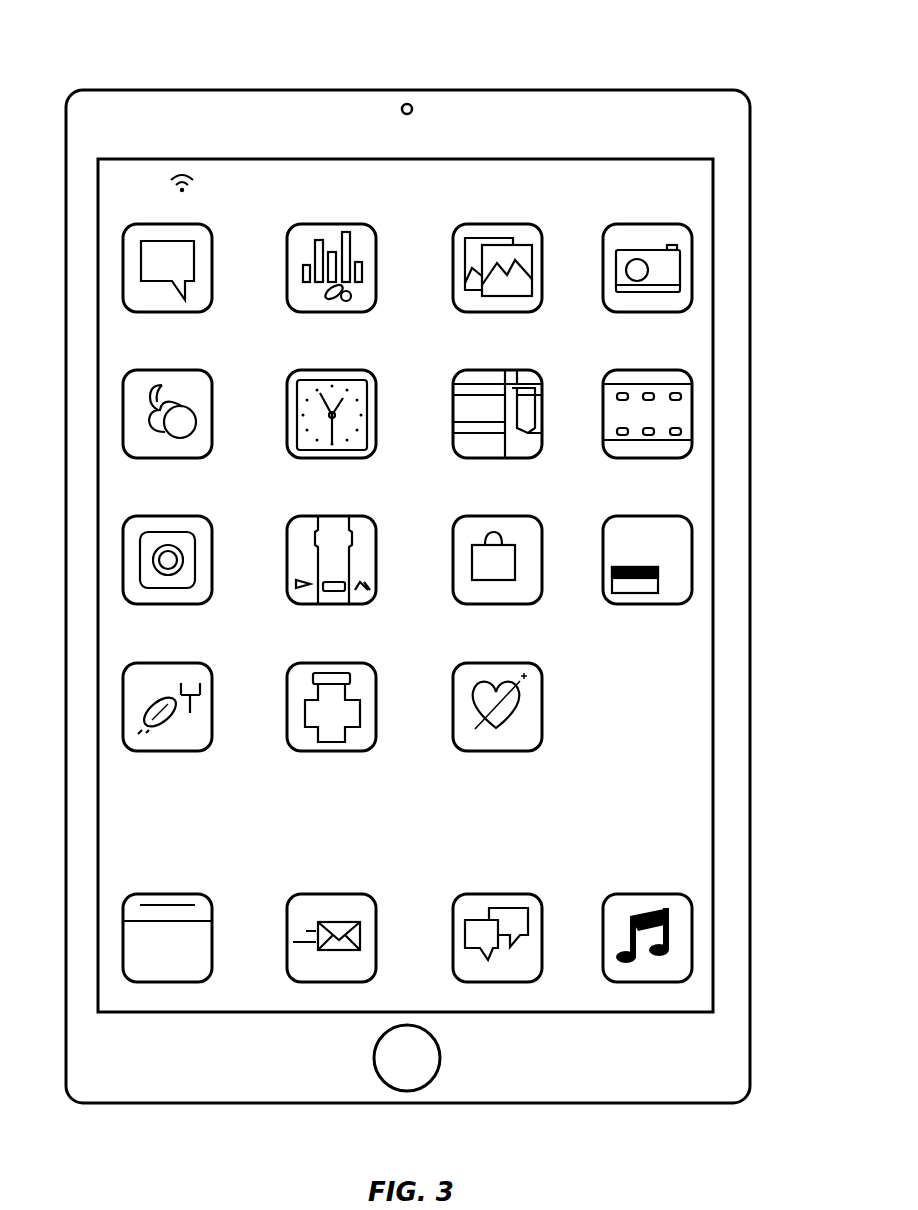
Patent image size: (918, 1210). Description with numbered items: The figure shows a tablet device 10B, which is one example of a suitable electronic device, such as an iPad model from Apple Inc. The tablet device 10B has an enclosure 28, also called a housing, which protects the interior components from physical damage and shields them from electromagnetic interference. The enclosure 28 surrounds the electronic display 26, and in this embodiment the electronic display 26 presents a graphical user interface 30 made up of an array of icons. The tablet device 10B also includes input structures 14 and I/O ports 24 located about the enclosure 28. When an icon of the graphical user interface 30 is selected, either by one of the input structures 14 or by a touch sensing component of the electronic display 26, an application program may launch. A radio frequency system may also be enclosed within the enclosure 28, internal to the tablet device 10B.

The tablet device 10B is at (80, 58).
The input structures 14 is at (667, 90).
The I/O ports 24 is at (164, 90).
The electronic display 26 is at (713, 760).
The enclosure 28 is at (750, 546).
The graphical user interface 30 is at (689, 714).